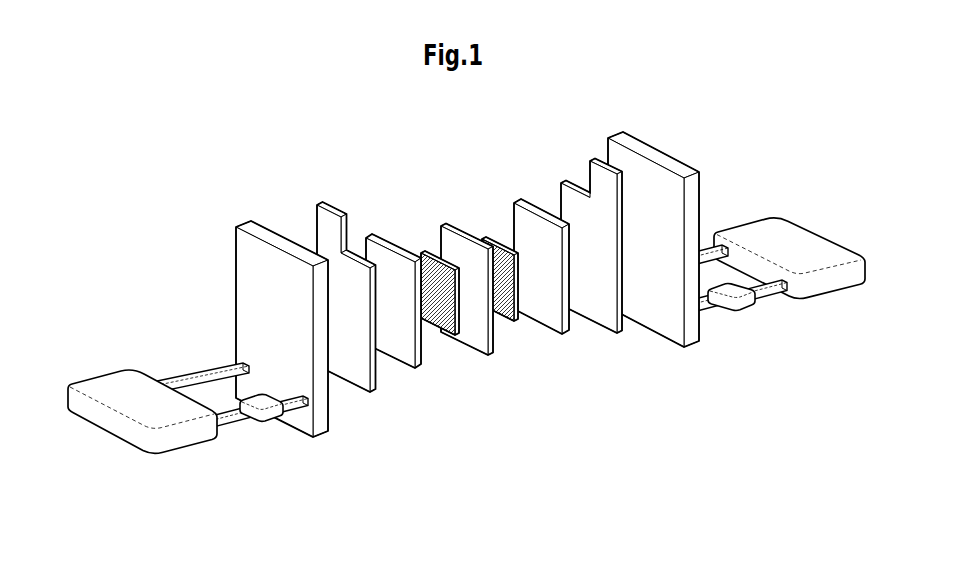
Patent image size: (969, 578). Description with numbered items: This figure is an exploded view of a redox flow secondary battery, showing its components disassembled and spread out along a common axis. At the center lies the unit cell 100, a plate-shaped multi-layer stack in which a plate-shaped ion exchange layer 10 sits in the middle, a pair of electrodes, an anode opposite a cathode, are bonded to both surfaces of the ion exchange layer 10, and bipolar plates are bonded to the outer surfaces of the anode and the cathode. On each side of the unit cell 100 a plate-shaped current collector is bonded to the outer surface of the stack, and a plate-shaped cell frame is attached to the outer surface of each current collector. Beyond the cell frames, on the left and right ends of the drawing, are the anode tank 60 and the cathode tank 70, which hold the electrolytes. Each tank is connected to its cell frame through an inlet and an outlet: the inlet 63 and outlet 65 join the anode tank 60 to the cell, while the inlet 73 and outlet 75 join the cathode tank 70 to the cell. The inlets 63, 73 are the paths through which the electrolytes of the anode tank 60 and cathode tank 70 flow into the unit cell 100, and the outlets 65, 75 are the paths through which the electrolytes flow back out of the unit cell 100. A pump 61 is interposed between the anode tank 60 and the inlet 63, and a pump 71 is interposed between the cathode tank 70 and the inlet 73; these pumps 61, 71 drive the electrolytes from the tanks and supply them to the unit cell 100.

The unit cell 100 is at (545, 145).
The ion exchange layer 10 is at (457, 243).
The anode tank 60 is at (116, 383).
The pump 61 is at (260, 418).
The inlet 63 is at (297, 417).
The outlet 65 is at (207, 375).
The cathode tank 70 is at (773, 228).
The pump 71 is at (750, 329).
The inlet 73 is at (710, 313).
The outlet 75 is at (712, 250).